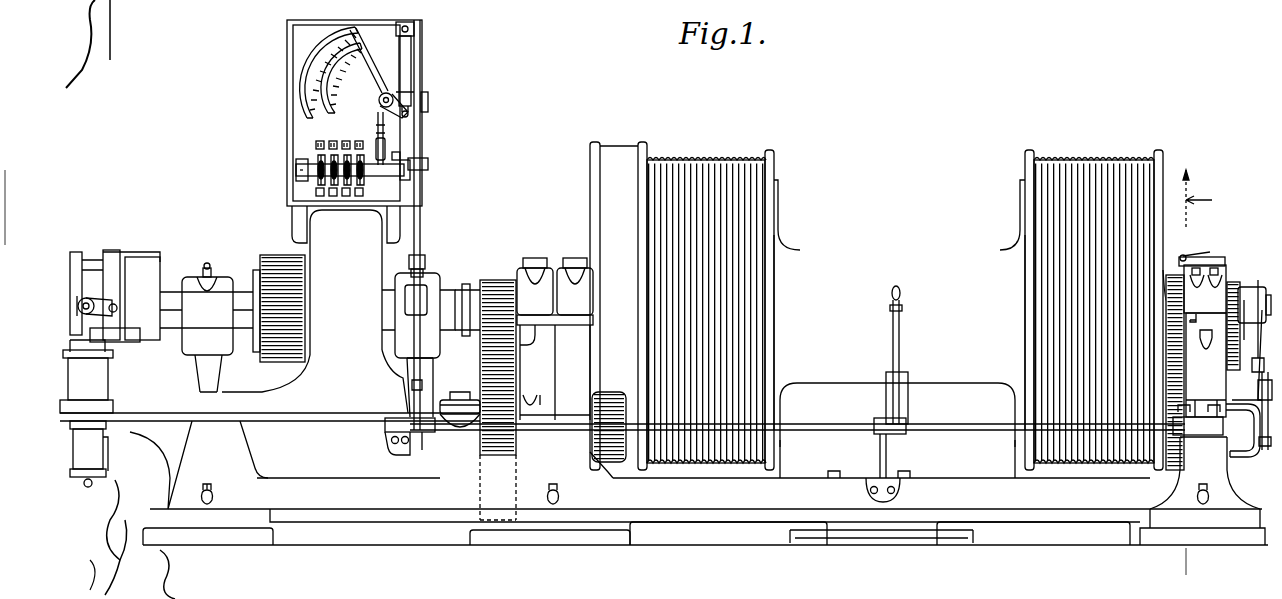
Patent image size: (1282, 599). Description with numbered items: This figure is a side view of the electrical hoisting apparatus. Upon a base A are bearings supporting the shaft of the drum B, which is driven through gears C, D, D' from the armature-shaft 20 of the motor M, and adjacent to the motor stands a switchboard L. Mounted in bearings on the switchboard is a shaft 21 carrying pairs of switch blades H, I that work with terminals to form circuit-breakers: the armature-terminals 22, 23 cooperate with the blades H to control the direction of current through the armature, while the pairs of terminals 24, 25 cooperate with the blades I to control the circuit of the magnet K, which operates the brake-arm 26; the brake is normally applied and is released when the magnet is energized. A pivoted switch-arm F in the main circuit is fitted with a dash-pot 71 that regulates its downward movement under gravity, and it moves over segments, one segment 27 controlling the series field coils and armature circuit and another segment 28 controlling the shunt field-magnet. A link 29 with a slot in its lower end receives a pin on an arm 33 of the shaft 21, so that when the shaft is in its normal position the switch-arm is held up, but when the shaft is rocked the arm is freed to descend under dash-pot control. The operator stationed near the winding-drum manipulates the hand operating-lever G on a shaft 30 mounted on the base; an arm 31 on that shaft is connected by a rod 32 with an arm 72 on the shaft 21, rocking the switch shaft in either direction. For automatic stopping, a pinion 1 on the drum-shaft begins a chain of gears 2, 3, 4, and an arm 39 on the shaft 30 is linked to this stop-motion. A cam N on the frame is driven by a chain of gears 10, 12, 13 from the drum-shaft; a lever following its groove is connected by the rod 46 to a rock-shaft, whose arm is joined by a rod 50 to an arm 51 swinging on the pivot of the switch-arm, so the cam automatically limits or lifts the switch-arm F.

The base A is at (730, 515).
The switchboard L is at (338, 131).
The segment 27 is at (336, 58).
The segment 28 is at (341, 78).
The switch-arm F is at (376, 73).
The dash-pot 71 is at (412, 77).
The arm 51 is at (428, 100).
The rod 50 is at (424, 145).
The arm 72 is at (426, 163).
The link 29 is at (380, 121).
The arm 33 is at (384, 153).
The armature-terminals 22 is at (330, 135).
The terminals 24 is at (354, 135).
The shaft 21 is at (296, 173).
The switch blades H is at (318, 182).
The switch blades I is at (362, 182).
The armature-terminals 23 is at (336, 198).
The terminals 25 is at (361, 198).
The motor M is at (270, 315).
The brake-arm 26 is at (118, 304).
The magnet K is at (86, 418).
The armature-shaft 20 is at (460, 300).
The gear C is at (496, 285).
The gear D is at (516, 342).
The gear D' is at (611, 411).
The rod 32 is at (410, 386).
The arm 31 is at (421, 445).
The shaft 30 is at (826, 422).
The pinion 1 is at (886, 310).
The drum B is at (896, 314).
The hand operating-lever G is at (900, 360).
The gear 2 is at (1196, 190).
The gear 3 is at (1166, 335).
The gear 10 is at (1213, 279).
The cam N is at (1255, 351).
The gear 12 is at (1228, 322).
The gear 13 is at (1225, 360).
The arm 39 is at (1232, 409).
The rod 46 is at (1235, 440).
The gear 4 is at (1165, 472).